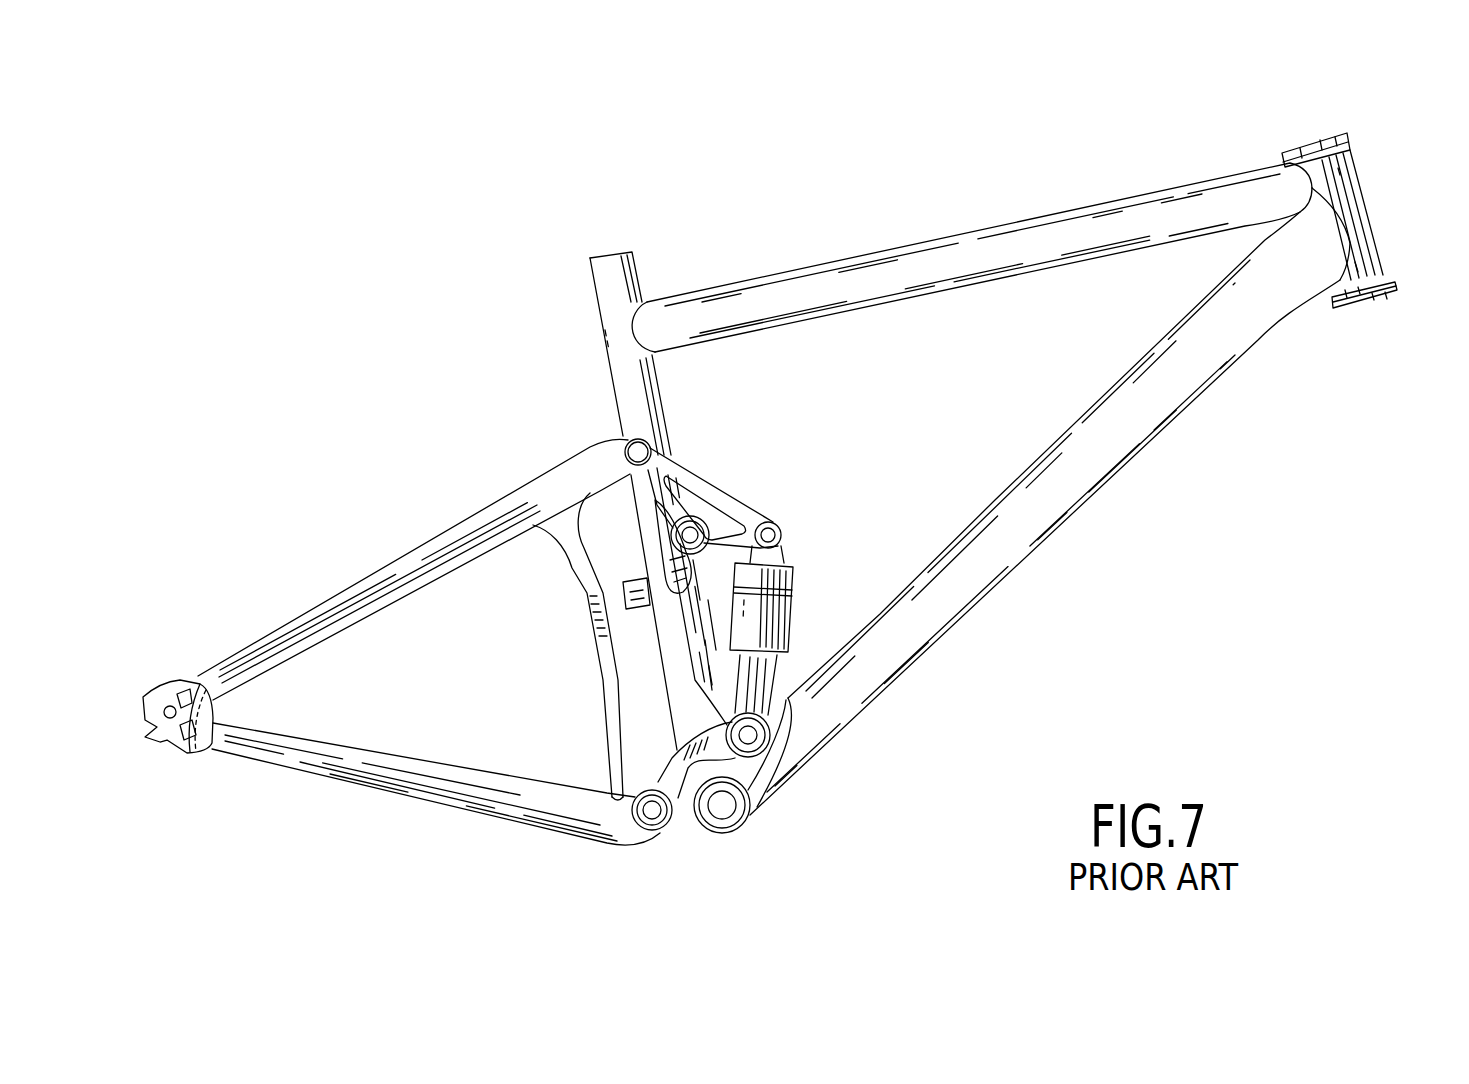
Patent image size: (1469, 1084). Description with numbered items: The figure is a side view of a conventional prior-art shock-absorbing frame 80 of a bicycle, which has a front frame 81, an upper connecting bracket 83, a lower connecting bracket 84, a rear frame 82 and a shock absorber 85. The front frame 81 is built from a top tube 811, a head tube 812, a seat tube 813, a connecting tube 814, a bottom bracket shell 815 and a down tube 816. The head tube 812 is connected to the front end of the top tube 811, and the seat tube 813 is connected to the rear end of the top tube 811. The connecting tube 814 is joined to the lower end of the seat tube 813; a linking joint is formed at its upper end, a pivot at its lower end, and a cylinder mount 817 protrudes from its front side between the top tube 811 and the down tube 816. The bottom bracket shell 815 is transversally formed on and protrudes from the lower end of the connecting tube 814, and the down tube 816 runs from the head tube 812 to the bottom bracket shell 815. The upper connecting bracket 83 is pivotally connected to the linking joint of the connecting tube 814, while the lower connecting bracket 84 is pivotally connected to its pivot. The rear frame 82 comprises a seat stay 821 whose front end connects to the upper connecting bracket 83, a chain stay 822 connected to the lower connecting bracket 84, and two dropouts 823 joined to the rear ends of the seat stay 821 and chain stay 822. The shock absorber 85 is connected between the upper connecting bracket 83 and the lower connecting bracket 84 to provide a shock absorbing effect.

The shock-absorbing frame 80 is at (368, 374).
The front frame 81 is at (990, 208).
The top tube 811 is at (812, 276).
The head tube 812 is at (1374, 258).
The seat tube 813 is at (608, 314).
The connecting tube 814 is at (680, 670).
The bottom bracket shell 815 is at (742, 824).
The down tube 816 is at (1133, 433).
The cylinder mount 817 is at (677, 558).
The rear frame 82 is at (328, 797).
The seat stay 821 is at (270, 636).
The chain stay 822 is at (495, 808).
The dropouts 823 is at (190, 742).
The upper connecting bracket 83 is at (732, 463).
The lower connecting bracket 84 is at (745, 768).
The shock absorber 85 is at (797, 578).